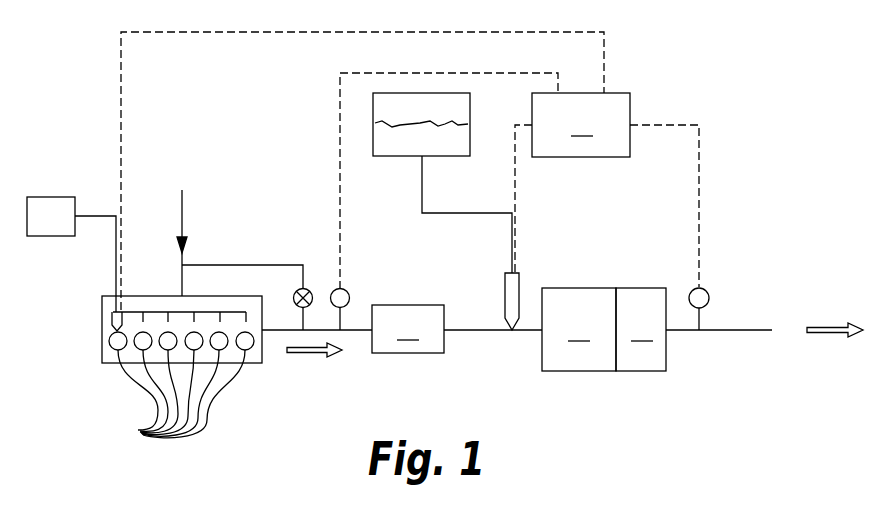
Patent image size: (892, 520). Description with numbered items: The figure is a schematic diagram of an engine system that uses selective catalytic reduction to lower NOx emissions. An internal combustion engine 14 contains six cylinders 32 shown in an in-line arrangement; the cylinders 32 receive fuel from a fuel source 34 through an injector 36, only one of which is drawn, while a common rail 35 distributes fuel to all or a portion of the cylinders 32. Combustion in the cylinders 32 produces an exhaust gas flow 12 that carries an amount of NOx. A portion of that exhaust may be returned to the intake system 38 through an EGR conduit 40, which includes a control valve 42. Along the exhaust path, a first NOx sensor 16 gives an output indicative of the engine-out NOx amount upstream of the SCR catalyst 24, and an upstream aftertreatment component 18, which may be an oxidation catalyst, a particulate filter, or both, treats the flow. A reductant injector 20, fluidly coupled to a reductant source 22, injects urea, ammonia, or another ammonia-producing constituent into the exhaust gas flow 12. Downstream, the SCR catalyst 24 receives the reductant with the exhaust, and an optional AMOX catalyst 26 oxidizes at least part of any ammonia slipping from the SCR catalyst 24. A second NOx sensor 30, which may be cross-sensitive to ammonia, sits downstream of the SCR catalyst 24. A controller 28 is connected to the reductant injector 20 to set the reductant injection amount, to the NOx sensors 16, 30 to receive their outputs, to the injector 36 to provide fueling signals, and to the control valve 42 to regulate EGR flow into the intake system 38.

The exhaust gas flow 12 is at (305, 357).
The internal combustion engine 14 is at (102, 308).
The first NOx sensor 16 is at (333, 288).
The upstream aftertreatment component 18 is at (408, 329).
The reductant injector 20 is at (503, 285).
The reductant source 22 is at (382, 158).
The SCR catalyst 24 is at (579, 329).
The AMOX catalyst 26 is at (641, 329).
The controller 28 is at (410, 171).
The second NOx sensor 30 is at (710, 298).
The cylinders 32 is at (145, 431).
The fuel source 34 is at (47, 197).
The common rail 35 is at (152, 311).
The injector 36 is at (112, 317).
The intake system 38 is at (181, 205).
The EGR conduit 40 is at (236, 264).
The control valve 42 is at (296, 300).